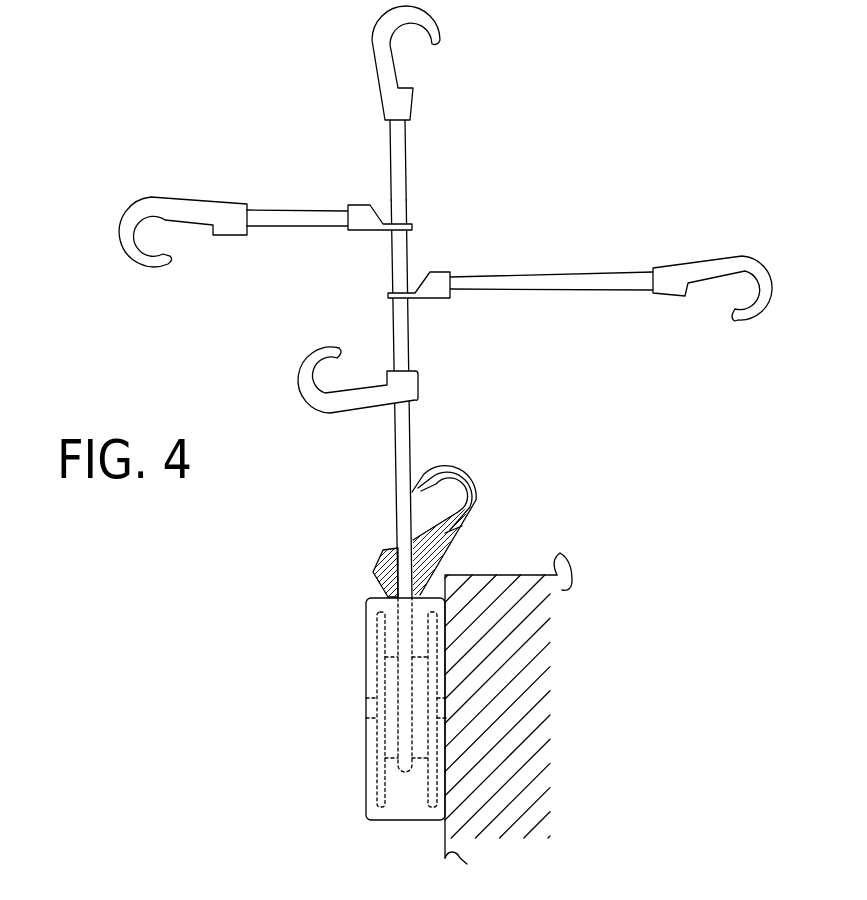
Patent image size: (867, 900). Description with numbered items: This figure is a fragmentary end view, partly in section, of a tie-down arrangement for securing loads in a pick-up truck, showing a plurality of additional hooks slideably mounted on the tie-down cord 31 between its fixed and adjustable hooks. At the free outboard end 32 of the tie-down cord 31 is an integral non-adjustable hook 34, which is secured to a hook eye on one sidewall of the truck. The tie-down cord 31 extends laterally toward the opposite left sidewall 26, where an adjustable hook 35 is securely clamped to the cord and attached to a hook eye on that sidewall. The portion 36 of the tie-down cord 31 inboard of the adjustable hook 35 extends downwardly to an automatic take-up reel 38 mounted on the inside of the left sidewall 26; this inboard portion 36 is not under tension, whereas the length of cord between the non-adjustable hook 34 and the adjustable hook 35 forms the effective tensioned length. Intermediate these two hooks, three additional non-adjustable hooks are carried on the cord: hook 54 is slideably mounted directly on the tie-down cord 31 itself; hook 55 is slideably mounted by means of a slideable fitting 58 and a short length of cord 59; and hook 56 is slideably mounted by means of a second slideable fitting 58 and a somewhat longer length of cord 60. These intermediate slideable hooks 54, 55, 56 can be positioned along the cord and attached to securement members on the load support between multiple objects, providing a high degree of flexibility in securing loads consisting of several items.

The left sidewall 26 is at (510, 682).
The tie-down cord 31 is at (400, 258).
The free outboard end 32 is at (405, 125).
The non-adjustable hook 34 is at (373, 45).
The adjustable hook 35 is at (457, 527).
The portion of the tie-down cord inboard of the adjustable hook 36 is at (402, 632).
The automatic take-up reel 38 is at (350, 790).
The hook 54 is at (337, 402).
The hook 55 is at (185, 205).
The hook 56 is at (750, 232).
The slideable fitting 58 is at (370, 212).
The short length of cord 59 is at (292, 212).
The longer length of cord 60 is at (538, 283).